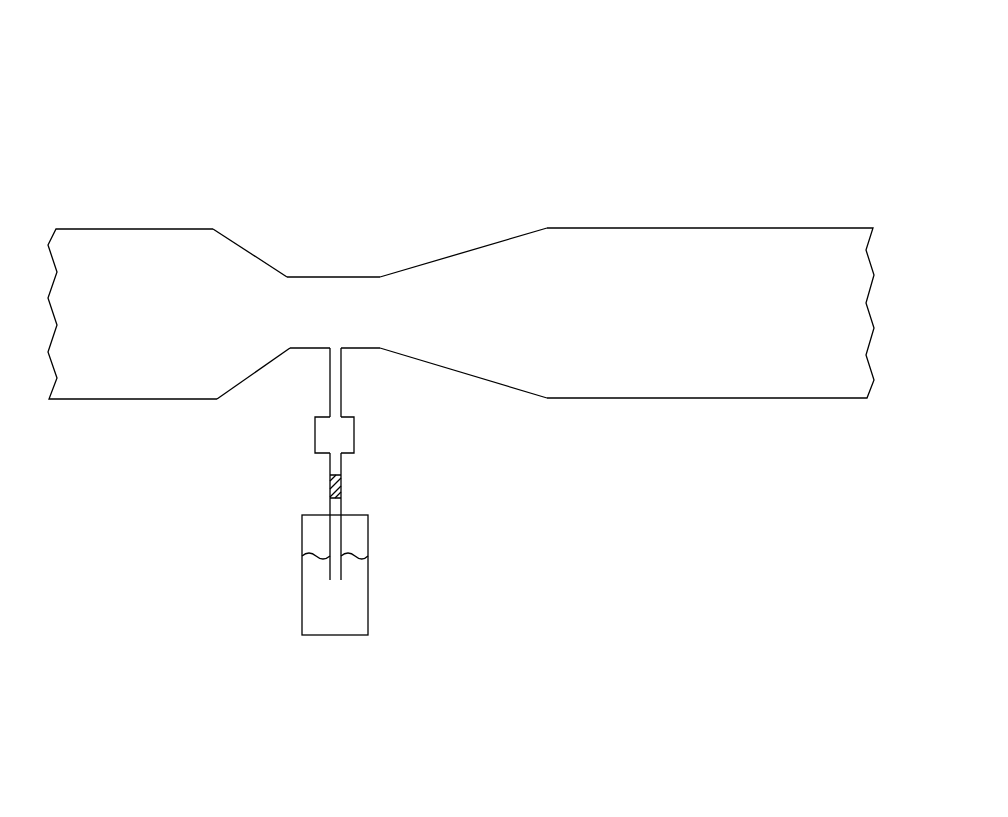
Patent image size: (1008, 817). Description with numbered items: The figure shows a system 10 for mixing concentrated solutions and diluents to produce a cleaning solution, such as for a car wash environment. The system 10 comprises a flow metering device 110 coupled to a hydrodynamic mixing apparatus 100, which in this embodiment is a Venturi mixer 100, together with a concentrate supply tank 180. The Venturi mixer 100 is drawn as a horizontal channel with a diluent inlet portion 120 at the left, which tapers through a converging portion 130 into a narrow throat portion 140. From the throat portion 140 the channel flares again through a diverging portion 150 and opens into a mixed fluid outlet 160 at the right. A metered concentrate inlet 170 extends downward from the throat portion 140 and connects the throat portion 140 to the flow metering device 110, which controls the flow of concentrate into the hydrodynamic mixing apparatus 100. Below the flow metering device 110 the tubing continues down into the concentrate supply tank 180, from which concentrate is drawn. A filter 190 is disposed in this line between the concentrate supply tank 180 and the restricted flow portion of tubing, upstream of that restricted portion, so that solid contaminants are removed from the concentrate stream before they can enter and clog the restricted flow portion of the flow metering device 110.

The system 10 is at (640, 121).
The hydrodynamic mixing apparatus 100 is at (173, 187).
The flow metering device 110 is at (354, 432).
The diluent inlet portion 120 is at (133, 400).
The converging portion 130 is at (248, 252).
The throat portion 140 is at (333, 277).
The diverging portion 150 is at (463, 251).
The mixed fluid outlet 160 is at (708, 228).
The metered concentrate inlet 170 is at (347, 353).
The concentrate supply tank 180 is at (368, 572).
The filter 190 is at (341, 487).